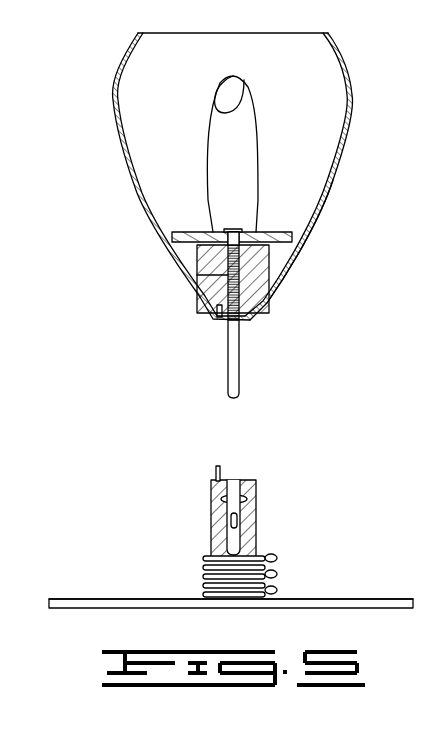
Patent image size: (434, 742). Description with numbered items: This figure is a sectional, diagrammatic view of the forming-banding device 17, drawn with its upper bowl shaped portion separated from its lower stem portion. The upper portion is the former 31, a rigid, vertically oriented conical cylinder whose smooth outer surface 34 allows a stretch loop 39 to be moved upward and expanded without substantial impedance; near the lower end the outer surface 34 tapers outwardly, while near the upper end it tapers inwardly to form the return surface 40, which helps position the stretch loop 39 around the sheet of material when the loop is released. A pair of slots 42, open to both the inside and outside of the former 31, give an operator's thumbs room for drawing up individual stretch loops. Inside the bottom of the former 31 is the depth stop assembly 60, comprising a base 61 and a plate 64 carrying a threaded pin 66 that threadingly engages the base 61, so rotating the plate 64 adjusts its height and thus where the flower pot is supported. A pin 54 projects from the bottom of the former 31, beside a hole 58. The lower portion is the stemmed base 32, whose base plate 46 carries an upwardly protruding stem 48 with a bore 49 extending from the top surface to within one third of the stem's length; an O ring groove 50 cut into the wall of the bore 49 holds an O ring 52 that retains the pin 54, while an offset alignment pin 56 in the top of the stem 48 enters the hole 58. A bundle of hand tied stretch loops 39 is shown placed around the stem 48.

The forming-banding device 17 is at (126, 46).
The former 31 is at (113, 100).
The outer surface 34 is at (336, 175).
The return surface 40 is at (341, 54).
The slots 42 is at (244, 80).
The plate 64 is at (180, 232).
The depth stop assembly 60 is at (286, 260).
The base 61 is at (195, 265).
The threaded pin 66 is at (216, 277).
The pin 54 is at (237, 360).
The hole 58 is at (218, 322).
The stemmed base 32 is at (350, 597).
The base plate 46 is at (105, 597).
The stem 48 is at (257, 506).
The O ring groove 50 is at (235, 495).
The O ring 52 is at (220, 498).
The bore 49 is at (228, 517).
The offset alignment pin 56 is at (217, 463).
The stretch loop 39 is at (205, 557).